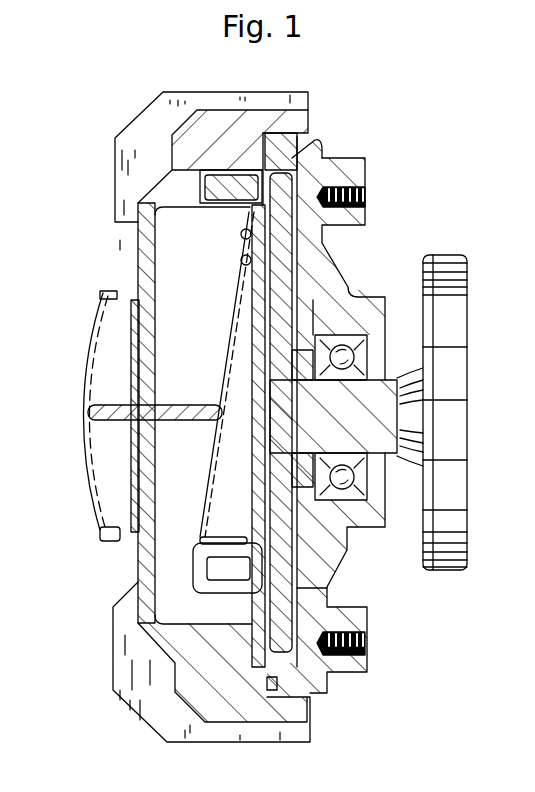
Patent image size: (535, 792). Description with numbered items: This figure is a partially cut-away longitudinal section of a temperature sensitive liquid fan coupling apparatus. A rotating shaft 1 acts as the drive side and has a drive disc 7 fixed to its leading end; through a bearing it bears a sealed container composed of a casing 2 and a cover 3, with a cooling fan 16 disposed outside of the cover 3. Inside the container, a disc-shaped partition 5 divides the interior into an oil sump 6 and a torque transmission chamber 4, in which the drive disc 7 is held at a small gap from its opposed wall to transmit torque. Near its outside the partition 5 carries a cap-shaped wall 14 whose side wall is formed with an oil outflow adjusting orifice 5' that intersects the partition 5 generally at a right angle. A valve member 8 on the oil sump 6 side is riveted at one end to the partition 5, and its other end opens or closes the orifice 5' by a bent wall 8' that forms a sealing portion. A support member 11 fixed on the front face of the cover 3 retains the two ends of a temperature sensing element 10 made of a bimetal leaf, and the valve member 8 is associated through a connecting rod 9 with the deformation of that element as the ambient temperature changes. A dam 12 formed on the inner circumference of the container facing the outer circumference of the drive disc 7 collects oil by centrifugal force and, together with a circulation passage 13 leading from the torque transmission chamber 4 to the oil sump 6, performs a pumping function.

The rotating shaft 1 is at (392, 410).
The casing 2 is at (330, 277).
The cover 3 is at (143, 267).
The torque transmission chamber 4 is at (297, 246).
The disc-shaped partition 5 is at (158, 239).
The oil outflow adjusting orifice 5' is at (351, 600).
The oil sump 6 is at (173, 332).
The drive disc 7 is at (347, 550).
The valve member 8 is at (142, 374).
The bent wall 8' is at (223, 507).
The connecting rod 9 is at (117, 406).
The temperature sensing element 10 is at (82, 367).
The support member 11 is at (133, 491).
The dam 12 is at (300, 133).
The circulation passage 13 is at (197, 183).
The cap-shaped wall 14 is at (200, 568).
The cooling fan 16 is at (172, 102).